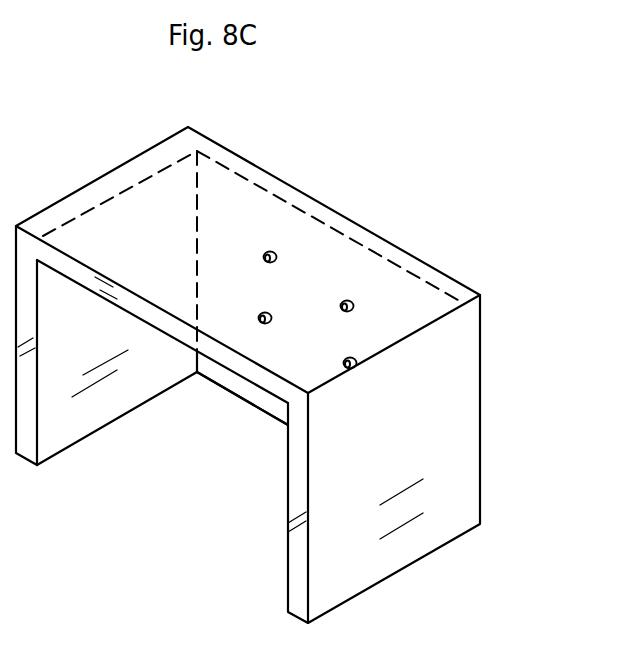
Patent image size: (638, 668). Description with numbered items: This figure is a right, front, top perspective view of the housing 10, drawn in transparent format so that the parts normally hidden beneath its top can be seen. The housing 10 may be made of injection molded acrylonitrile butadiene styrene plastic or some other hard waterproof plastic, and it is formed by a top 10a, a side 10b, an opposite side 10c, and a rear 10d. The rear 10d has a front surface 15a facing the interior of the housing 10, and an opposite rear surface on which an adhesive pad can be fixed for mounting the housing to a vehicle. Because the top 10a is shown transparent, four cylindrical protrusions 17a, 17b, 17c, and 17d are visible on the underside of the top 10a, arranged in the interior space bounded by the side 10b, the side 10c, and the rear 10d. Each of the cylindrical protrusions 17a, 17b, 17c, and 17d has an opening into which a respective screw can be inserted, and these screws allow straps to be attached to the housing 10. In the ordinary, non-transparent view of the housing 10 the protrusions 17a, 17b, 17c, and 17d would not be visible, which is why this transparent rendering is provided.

The housing 10 is at (372, 201).
The top 10a is at (122, 217).
The side 10b is at (58, 410).
The side 10c is at (355, 553).
The rear 10d is at (287, 182).
The front surface 15a is at (245, 398).
The cylindrical protrusion 17a is at (264, 251).
The cylindrical protrusion 17b is at (343, 298).
The cylindrical protrusion 17c is at (260, 312).
The cylindrical protrusion 17d is at (347, 357).